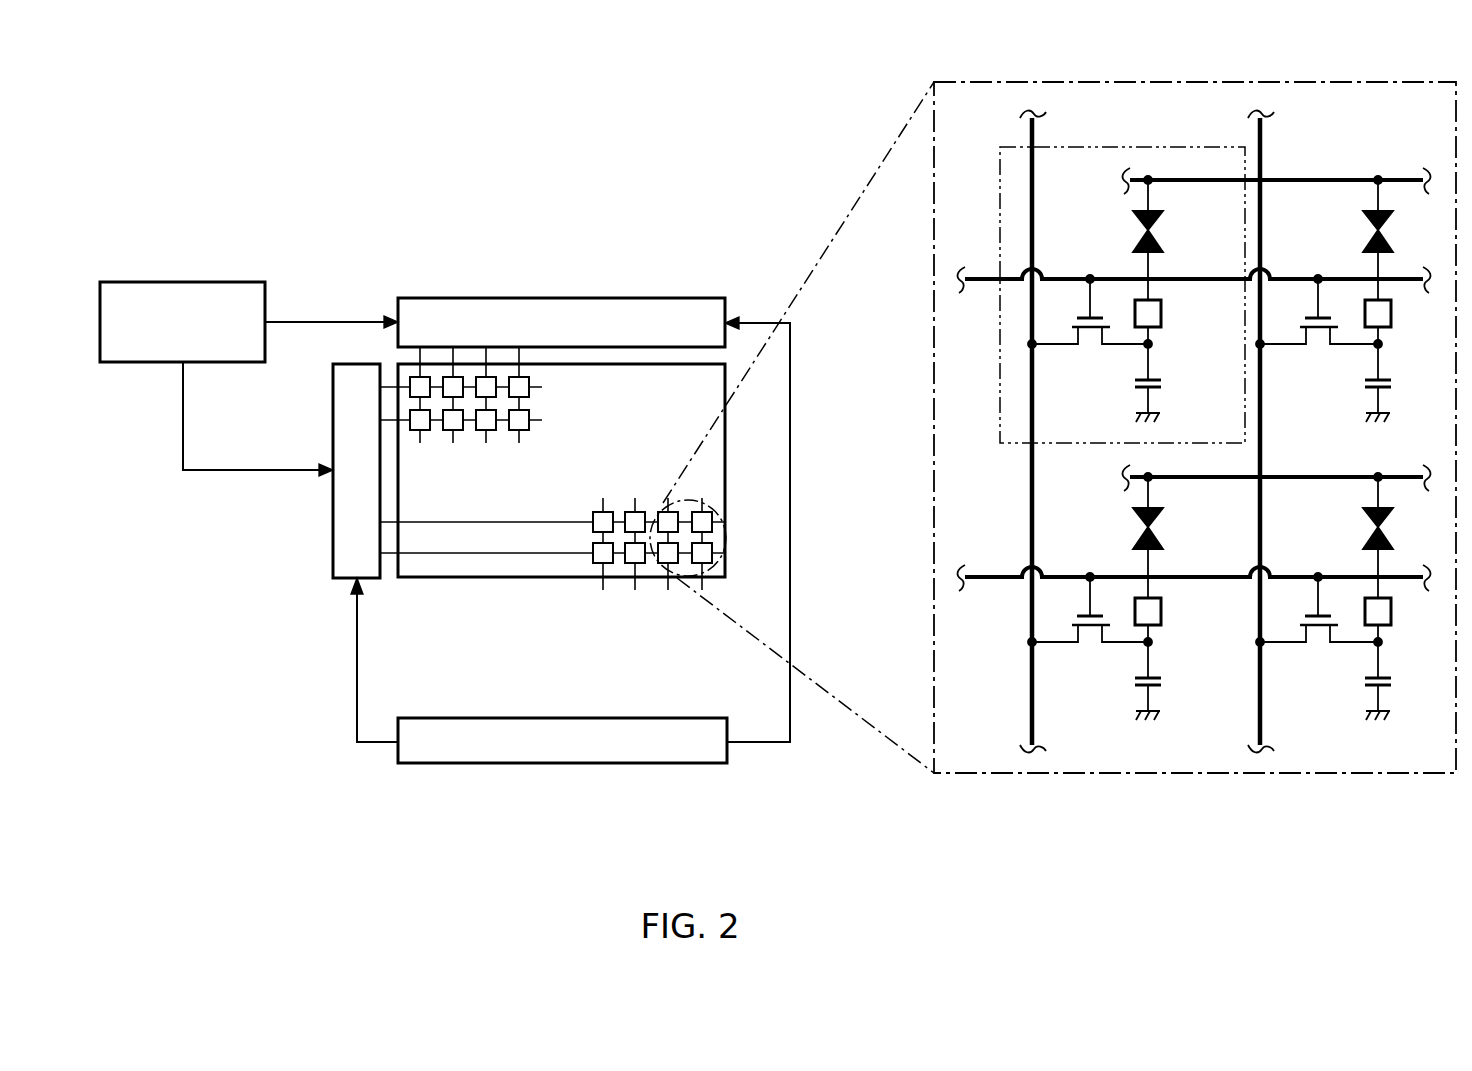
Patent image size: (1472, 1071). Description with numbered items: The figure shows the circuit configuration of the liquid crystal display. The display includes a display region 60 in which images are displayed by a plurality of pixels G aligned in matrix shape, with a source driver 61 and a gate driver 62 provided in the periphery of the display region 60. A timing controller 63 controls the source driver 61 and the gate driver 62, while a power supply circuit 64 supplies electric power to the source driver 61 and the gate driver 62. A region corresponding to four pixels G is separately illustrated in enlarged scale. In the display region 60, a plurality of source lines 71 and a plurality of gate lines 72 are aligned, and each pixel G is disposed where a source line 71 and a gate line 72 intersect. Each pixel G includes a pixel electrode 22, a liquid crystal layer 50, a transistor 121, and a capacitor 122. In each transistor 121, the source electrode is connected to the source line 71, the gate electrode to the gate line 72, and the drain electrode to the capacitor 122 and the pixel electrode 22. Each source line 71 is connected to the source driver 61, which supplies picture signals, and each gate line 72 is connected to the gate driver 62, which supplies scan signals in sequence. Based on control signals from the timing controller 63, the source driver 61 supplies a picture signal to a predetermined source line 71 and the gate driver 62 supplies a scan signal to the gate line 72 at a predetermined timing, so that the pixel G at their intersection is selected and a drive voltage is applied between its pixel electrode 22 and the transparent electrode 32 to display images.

The display region 60 is at (463, 578).
The source driver 61 is at (673, 298).
The gate driver 62 is at (343, 580).
The timing controller 63 is at (185, 282).
The power supply circuit 64 is at (560, 763).
The pixel G is at (603, 590).
The source line 71 is at (1032, 132).
The gate line 72 is at (972, 286).
The transparent electrode 32 is at (1310, 178).
The liquid crystal layer 50 is at (1142, 234).
The pixel electrode 22 is at (1163, 316).
The transistor 121 is at (1090, 332).
The capacitor 122 is at (1163, 388).